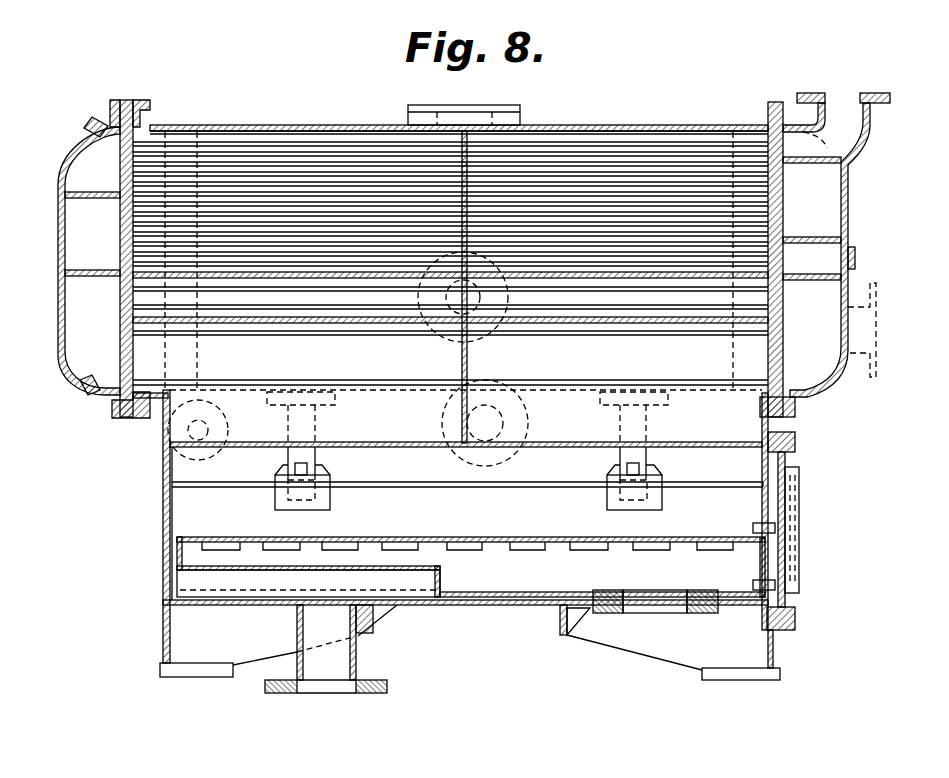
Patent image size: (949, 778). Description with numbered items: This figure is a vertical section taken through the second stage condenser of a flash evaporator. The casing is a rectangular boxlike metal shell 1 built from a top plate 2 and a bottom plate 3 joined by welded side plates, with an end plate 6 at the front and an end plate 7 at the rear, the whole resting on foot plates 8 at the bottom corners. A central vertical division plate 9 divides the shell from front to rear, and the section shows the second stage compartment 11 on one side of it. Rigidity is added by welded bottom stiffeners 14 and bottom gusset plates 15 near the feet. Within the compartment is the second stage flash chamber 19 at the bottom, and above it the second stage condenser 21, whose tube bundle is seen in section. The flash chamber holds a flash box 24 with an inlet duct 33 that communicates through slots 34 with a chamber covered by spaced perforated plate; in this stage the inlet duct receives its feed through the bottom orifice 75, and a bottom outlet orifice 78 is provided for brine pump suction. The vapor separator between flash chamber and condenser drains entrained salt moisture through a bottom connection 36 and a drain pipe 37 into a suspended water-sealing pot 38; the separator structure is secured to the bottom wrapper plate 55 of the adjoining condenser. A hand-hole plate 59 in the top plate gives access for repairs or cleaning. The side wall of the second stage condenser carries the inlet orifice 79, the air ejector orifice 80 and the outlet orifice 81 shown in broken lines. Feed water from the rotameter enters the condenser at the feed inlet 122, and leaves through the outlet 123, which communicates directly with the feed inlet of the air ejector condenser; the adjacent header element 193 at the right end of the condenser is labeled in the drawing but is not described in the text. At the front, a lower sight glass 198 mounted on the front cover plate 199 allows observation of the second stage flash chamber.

The shell 1 is at (165, 480).
The top plate 2 is at (598, 128).
The bottom plate 3 is at (236, 607).
The end plate 6 is at (772, 420).
The end plate 7 is at (170, 542).
The foot plates 8 is at (190, 676).
The central vertical division plate 9 is at (182, 512).
The second stage compartment 11 is at (546, 133).
The bottom stiffeners 14 is at (366, 630).
The bottom gusset plates 15 is at (356, 611).
The flash chamber 19 is at (690, 458).
The condenser 21 is at (213, 150).
The flash box 24 is at (487, 551).
The inlet duct 33 is at (690, 553).
The slots 34 is at (370, 543).
The bottom connection 36 is at (308, 392).
The drain pipe 37 is at (316, 458).
The water-sealing pot 38 is at (283, 497).
The bottom wrapper plate 55 is at (400, 442).
The hand-hole plate 59 is at (462, 122).
The bottom orifice 75 is at (657, 608).
The bottom outlet orifice 78 is at (297, 617).
The inlet orifice 79 is at (186, 428).
The air ejector orifice 80 is at (432, 318).
The outlet orifice 81 is at (503, 424).
The feed inlet 122 is at (873, 330).
The outlet 123 is at (843, 143).
The right header 193 is at (845, 228).
The sight glass 198 is at (800, 530).
The front cover plate 199 is at (797, 602).